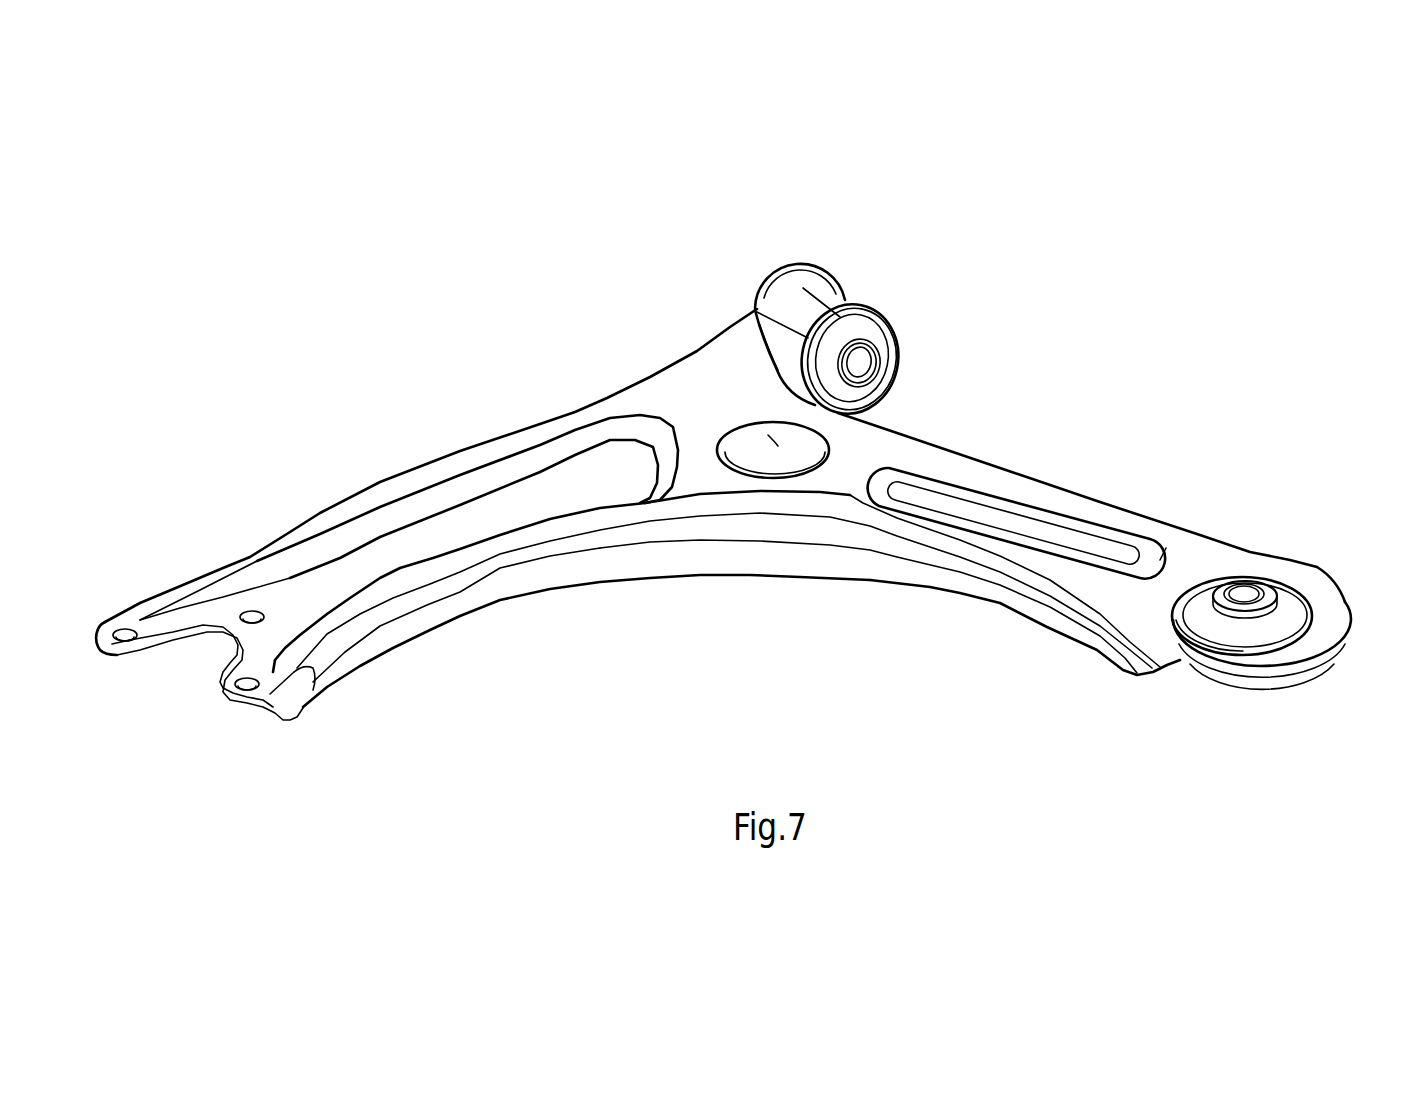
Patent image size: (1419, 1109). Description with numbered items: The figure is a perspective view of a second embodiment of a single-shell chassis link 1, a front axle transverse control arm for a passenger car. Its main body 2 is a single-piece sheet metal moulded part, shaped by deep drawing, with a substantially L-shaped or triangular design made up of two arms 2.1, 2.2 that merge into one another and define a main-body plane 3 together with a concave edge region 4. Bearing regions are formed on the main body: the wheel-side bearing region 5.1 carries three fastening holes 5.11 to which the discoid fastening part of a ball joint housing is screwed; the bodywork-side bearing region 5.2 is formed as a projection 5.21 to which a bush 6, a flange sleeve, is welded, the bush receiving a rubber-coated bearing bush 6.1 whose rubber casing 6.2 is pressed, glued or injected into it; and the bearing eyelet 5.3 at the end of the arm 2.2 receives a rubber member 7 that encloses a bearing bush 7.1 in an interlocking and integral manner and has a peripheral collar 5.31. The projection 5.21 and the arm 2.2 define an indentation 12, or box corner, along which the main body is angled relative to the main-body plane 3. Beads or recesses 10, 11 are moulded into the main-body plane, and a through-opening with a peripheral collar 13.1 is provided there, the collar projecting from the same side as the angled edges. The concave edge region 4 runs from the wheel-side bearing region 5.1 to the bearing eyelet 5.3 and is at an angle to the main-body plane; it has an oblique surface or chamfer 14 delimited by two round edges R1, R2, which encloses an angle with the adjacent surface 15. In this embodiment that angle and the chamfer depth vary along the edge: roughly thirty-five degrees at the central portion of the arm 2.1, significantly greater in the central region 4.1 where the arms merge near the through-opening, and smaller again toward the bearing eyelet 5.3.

The chassis link 1 is at (1010, 405).
The main body 2 is at (481, 450).
The arm 2.1 is at (331, 513).
The arm 2.2 is at (1206, 545).
The main-body plane 3 is at (863, 453).
The concave edge region 4 is at (468, 598).
The central region 4.1 is at (778, 556).
The wheel-side bearing region 5.1 is at (272, 606).
The fastening holes 5.11 is at (245, 627).
The bearing region 5.2 is at (792, 311).
The projection 5.21 is at (808, 308).
The bearing eyelet 5.3 is at (1331, 604).
The peripheral collar 5.31 is at (1258, 681).
The bush 6 is at (894, 344).
The bearing bush 6.1 is at (861, 346).
The rubber casing 6.2 is at (879, 337).
The rubber member 7 is at (1291, 605).
The bearing bush 7.1 is at (1263, 592).
The recess 10 is at (1031, 529).
The recess 11 is at (423, 532).
The indentation 12 is at (790, 360).
The peripheral collar 13.1 is at (743, 450).
The oblique surface 14 is at (698, 505).
The surface 15 is at (643, 563).
The radius R1 is at (560, 523).
The radius R2 is at (571, 551).